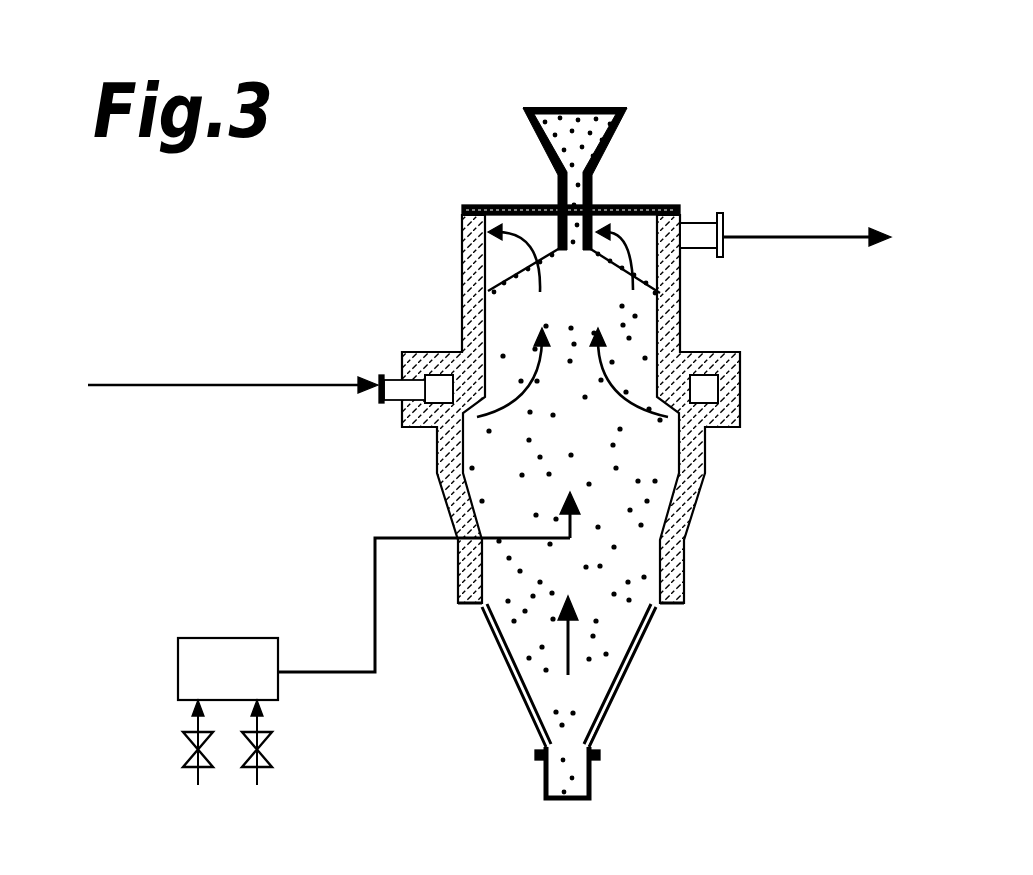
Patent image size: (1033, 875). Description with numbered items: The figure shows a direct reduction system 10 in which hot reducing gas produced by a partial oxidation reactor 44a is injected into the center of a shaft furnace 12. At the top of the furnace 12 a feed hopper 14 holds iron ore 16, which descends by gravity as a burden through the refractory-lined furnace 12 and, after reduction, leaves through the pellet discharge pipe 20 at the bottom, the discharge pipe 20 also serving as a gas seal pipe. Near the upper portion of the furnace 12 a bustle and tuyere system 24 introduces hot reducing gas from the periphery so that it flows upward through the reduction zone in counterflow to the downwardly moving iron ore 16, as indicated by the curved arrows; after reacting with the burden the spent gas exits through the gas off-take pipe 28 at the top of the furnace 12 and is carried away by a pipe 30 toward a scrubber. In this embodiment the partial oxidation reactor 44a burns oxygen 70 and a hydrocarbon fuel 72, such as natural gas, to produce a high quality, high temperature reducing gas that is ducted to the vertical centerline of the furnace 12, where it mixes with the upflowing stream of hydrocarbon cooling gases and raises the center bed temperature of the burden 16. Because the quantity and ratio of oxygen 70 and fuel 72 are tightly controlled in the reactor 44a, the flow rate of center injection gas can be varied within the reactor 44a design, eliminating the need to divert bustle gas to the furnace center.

The system 10 is at (685, 117).
The shaft furnace 12 is at (462, 250).
The feed hopper 14 is at (610, 142).
The iron ore 16 is at (573, 117).
The pellet discharge pipe 20 is at (590, 780).
The bustle and tuyere system 24 is at (430, 377).
The gas off-take pipe 28 is at (697, 223).
The pipe 30 is at (807, 237).
The partial oxidation reactor 44a is at (178, 700).
The oxygen 70 is at (198, 780).
The hydrocarbon fuel 72 is at (257, 778).